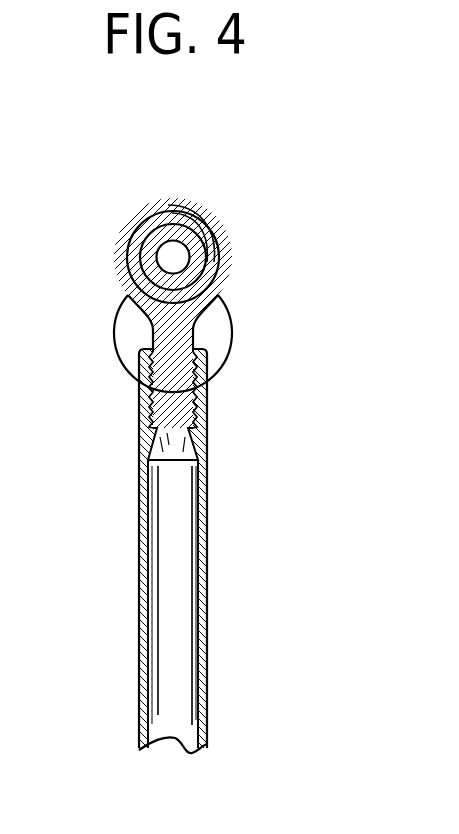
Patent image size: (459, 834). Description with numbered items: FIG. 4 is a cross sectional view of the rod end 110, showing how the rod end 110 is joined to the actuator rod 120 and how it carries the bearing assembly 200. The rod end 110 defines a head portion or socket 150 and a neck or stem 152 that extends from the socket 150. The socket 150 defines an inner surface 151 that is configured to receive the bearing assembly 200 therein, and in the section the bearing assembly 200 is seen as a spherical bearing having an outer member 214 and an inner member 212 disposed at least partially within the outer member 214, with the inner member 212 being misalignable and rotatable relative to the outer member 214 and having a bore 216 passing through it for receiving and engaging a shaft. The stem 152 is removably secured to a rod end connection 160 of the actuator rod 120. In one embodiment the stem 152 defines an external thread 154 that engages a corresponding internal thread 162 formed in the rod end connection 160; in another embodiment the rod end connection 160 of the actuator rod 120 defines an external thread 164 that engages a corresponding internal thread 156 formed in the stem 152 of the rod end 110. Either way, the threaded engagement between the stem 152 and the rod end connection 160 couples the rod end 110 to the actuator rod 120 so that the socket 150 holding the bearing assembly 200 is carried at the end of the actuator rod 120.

The rod end 110 is at (112, 287).
The actuator rod 120 is at (167, 620).
The socket 150 is at (212, 208).
The inner surface 151 is at (130, 248).
The stem 152 is at (155, 331).
The external thread 154 is at (197, 407).
The internal thread 156 is at (208, 360).
The rod end connection 160 is at (110, 385).
The internal thread 162 is at (193, 443).
The external thread 164 is at (204, 373).
The bearing assembly 200 is at (171, 208).
The inner member 212 is at (210, 240).
The outer member 214 is at (205, 285).
The bore 216 is at (162, 242).